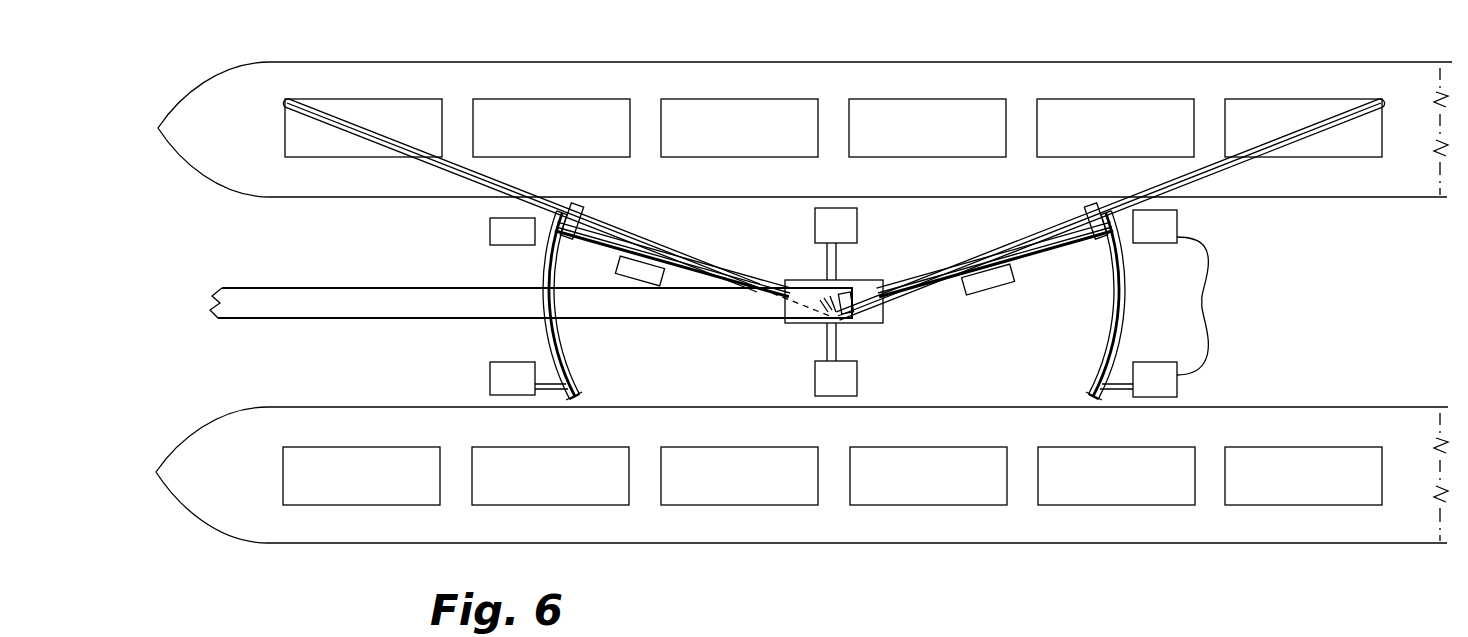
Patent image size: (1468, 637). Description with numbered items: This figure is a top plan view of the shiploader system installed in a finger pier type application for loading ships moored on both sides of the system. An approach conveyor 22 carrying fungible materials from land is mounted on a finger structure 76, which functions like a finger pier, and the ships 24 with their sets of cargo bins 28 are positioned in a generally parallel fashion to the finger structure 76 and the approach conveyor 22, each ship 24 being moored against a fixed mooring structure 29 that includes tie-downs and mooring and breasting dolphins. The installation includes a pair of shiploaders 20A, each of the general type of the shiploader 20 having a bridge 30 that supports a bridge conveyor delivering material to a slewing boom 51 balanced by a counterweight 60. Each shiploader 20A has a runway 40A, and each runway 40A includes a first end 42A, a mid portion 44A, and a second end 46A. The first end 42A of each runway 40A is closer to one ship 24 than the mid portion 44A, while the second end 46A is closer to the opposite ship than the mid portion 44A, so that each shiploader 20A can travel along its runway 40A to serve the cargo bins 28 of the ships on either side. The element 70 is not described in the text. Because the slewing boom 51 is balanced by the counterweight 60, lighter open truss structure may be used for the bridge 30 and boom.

The shiploader 20 is at (712, 625).
The shiploader 20A is at (1232, 324).
The approach conveyor 22 is at (345, 636).
The ship 24 is at (1262, 200).
The cargo bins 28 is at (523, 145).
The fixed mooring structure 29 is at (858, 222).
The bridge 30 is at (690, 260).
The runway 40A is at (562, 330).
The first end of runway 42A is at (582, 391).
The mid portion of runway 44A is at (548, 318).
The second end of runway 46A is at (584, 228).
The slewing boom 51 is at (420, 165).
The counterweight 60 is at (1022, 636).
The member 70 is at (876, 636).
The finger structure 76 is at (384, 319).